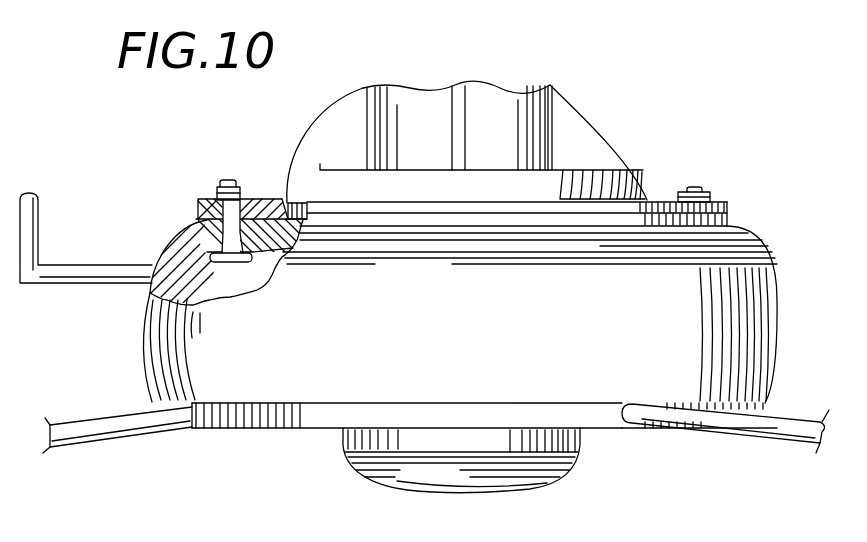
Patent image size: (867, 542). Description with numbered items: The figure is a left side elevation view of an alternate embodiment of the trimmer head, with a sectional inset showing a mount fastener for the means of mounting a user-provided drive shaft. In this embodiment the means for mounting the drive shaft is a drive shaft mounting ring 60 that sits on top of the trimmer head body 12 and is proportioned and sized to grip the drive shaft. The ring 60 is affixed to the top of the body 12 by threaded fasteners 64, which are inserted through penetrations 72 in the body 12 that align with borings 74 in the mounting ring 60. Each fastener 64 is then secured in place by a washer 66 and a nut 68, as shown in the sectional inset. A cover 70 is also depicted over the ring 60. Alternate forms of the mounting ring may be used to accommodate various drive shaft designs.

The trimmer head body 12 is at (752, 236).
The drive shaft mounting ring 60 is at (655, 200).
The threaded fasteners 64 is at (227, 180).
The washers 66 is at (197, 205).
The nuts 68 is at (216, 192).
The hood cover 70 is at (600, 123).
The penetrations 72 is at (187, 222).
The borings 74 is at (262, 194).